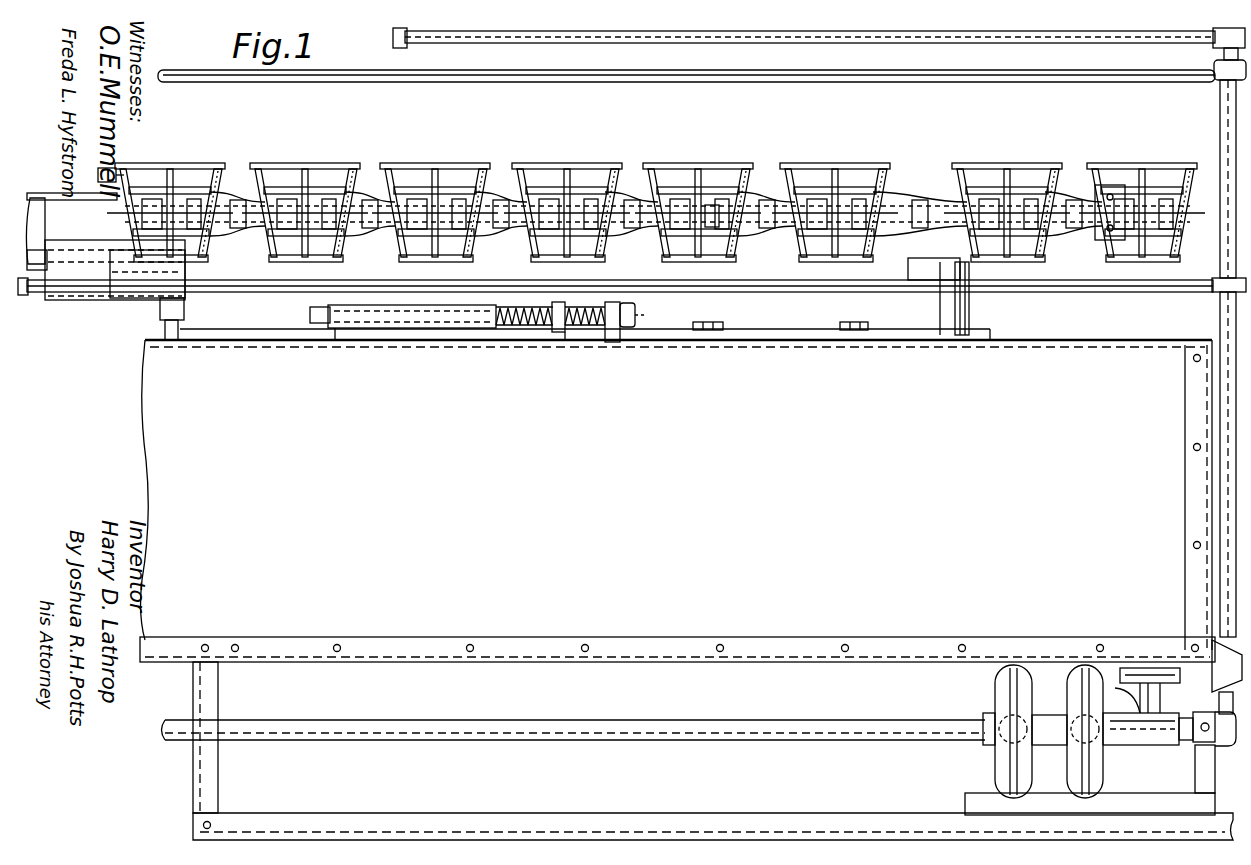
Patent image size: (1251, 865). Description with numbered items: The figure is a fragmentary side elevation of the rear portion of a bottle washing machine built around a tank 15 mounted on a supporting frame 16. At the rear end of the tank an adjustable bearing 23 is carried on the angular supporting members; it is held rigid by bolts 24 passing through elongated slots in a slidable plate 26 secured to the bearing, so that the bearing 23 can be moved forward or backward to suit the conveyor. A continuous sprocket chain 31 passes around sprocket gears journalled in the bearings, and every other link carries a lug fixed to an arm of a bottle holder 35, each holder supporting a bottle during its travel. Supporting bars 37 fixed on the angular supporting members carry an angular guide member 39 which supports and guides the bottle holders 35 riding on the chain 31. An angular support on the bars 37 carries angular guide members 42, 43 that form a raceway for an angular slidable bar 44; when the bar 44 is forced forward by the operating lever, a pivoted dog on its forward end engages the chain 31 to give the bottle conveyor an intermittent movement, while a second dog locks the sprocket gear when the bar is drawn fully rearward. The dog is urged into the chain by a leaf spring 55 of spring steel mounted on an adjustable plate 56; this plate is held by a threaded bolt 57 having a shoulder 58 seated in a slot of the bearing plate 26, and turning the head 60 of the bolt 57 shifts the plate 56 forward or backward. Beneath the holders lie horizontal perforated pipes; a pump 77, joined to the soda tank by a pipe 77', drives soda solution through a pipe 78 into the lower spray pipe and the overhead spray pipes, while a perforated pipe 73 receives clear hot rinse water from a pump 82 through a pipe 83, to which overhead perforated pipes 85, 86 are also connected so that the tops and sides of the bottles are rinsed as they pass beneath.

The tank 15 is at (140, 430).
The supporting frame 16 is at (213, 734).
The adjustable bearing 23 is at (958, 313).
The bolts 24 is at (710, 324).
The slidable plate 26 is at (758, 336).
The sprocket chain 31 is at (243, 190).
The bottle holder 35 is at (172, 165).
The supporting bars 37 is at (185, 306).
The angular guide member 39 is at (130, 272).
The angular guide member 42 is at (98, 176).
The angular guide member 43 is at (33, 295).
The slidable bar 44 is at (50, 208).
The leaf spring 55 is at (712, 215).
The adjustable plate 56 is at (520, 336).
The threaded bolt 57 is at (588, 333).
The shoulder 58 is at (637, 314).
The head 60 is at (318, 323).
The perforated pipe 73 is at (1168, 292).
The pump 77 is at (1085, 740).
The pipe 77' is at (574, 715).
The pipe 78 is at (1152, 748).
The pump 82 is at (1220, 196).
The pipe 83 is at (1195, 672).
The perforated pipe 85 is at (540, 43).
The perforated pipe 86 is at (481, 83).